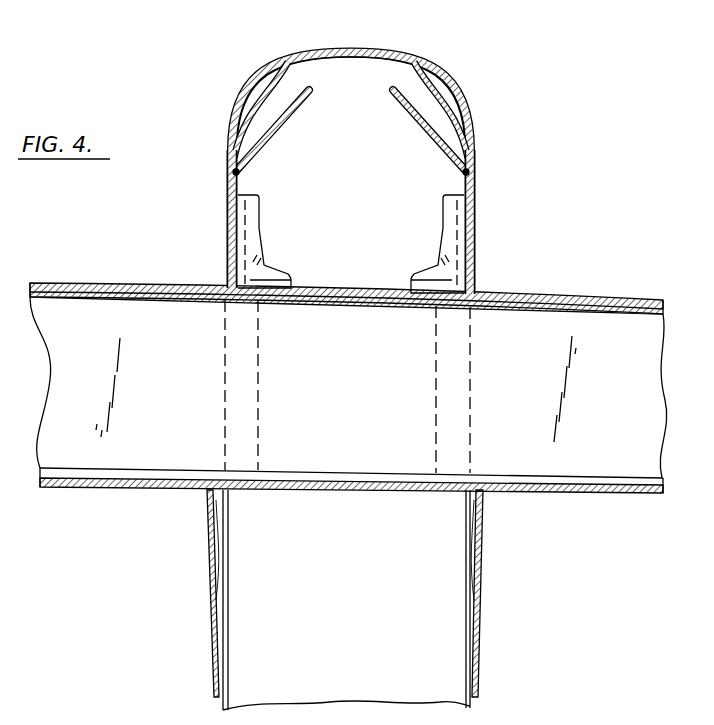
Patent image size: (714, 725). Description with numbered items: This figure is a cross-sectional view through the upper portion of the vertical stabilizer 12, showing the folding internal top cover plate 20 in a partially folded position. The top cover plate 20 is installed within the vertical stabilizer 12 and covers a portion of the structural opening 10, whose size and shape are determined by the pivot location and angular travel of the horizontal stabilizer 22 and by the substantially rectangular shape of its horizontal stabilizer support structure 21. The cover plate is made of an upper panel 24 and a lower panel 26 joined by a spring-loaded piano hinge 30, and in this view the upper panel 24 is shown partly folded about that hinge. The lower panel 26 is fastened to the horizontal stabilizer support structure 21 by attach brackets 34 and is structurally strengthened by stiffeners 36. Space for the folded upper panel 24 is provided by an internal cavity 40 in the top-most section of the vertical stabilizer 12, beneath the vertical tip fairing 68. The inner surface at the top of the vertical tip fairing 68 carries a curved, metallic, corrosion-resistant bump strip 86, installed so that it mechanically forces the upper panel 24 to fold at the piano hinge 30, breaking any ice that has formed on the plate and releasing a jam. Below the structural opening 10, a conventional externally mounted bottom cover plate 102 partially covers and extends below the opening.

The structural opening 10 is at (228, 243).
The vertical stabilizer 12 is at (223, 706).
The top cover plate 20 is at (252, 146).
The horizontal stabilizer support structure 21 is at (337, 495).
The horizontal stabilizer 22 is at (100, 489).
The upper panel 24 is at (389, 92).
The lower panel 26 is at (230, 237).
The piano hinge 30 is at (227, 172).
The attach brackets 34 is at (440, 270).
The stiffeners 36 is at (259, 203).
The internal cavity 40 is at (352, 50).
The vertical tip fairing 68 is at (391, 57).
The bump strip 86 is at (267, 97).
The bottom cover plate 102 is at (207, 598).